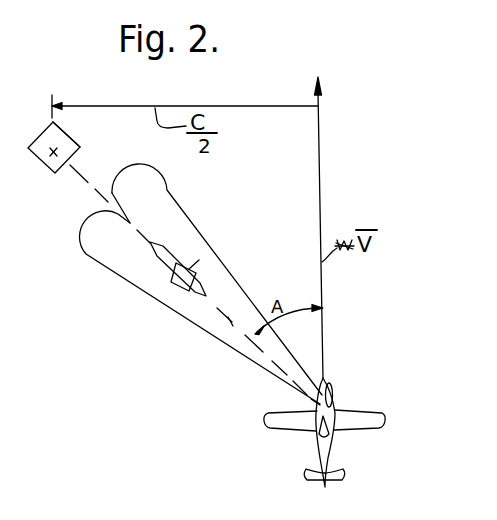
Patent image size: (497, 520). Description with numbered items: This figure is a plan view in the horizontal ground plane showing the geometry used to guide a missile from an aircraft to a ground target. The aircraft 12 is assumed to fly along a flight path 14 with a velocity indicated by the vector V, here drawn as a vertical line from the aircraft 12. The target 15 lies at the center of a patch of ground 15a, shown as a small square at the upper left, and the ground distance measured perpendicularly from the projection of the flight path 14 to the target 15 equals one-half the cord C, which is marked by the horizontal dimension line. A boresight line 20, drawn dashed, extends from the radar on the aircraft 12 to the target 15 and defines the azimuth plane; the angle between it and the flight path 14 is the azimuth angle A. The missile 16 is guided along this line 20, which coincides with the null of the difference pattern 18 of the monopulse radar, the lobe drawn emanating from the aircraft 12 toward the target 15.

The aircraft 12 is at (277, 424).
The flight path 14 is at (322, 164).
The target 15 is at (52, 165).
The patch of ground 15a is at (72, 143).
The missile 16 is at (172, 250).
The difference pattern 18 is at (171, 190).
The boresight line 20 is at (231, 322).